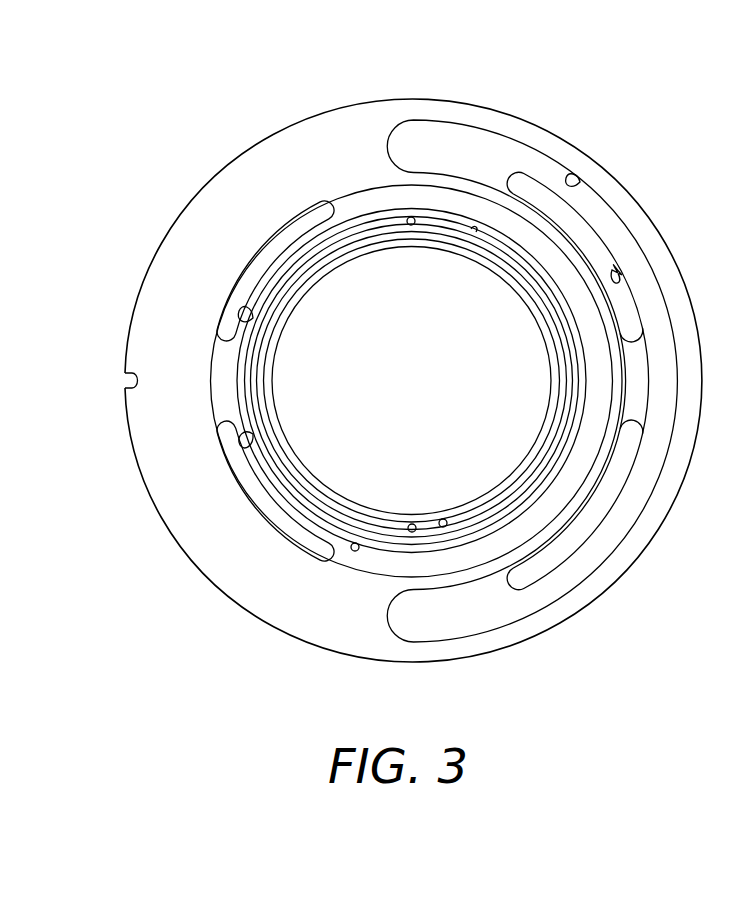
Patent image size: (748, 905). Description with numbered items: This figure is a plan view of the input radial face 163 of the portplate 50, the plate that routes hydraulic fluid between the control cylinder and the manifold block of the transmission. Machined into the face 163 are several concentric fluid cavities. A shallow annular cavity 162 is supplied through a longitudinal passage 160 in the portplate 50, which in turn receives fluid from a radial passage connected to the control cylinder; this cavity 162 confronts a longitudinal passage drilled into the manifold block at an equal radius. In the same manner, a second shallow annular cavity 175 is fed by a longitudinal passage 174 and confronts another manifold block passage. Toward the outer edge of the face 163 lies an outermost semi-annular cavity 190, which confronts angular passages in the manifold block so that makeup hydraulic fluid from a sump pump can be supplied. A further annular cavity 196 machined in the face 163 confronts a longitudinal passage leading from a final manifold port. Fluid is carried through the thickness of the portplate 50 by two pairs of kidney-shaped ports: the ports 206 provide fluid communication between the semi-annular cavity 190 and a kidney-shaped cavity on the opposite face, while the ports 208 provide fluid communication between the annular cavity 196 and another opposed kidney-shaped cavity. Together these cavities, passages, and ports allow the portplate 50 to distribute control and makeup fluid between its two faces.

The portplate 50 is at (538, 101).
The longitudinal passage 160 is at (409, 223).
The shallow annular cavity 162 is at (476, 232).
The input radial face 163 is at (338, 616).
The longitudinal passage 174 is at (413, 524).
The shallow annular cavity 175 is at (443, 519).
The outermost semi-annular cavity 190 is at (580, 182).
The annular cavity 196 is at (357, 543).
The kidney-shaped ports 206 is at (622, 275).
The kidney-shaped ports 208 is at (253, 432).